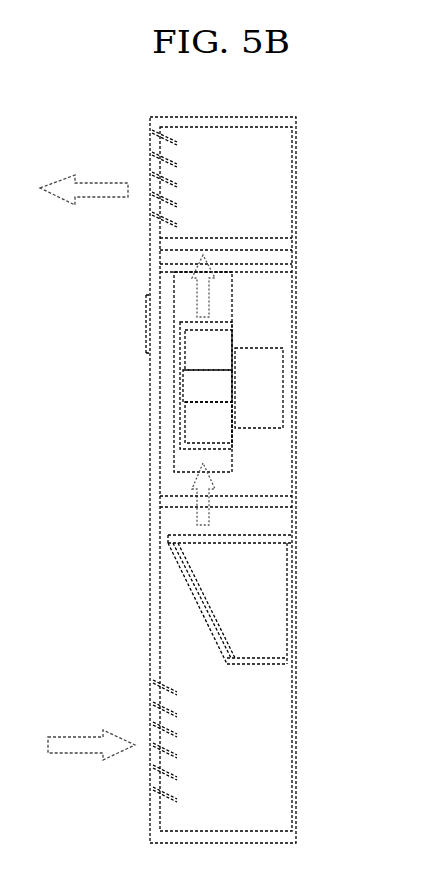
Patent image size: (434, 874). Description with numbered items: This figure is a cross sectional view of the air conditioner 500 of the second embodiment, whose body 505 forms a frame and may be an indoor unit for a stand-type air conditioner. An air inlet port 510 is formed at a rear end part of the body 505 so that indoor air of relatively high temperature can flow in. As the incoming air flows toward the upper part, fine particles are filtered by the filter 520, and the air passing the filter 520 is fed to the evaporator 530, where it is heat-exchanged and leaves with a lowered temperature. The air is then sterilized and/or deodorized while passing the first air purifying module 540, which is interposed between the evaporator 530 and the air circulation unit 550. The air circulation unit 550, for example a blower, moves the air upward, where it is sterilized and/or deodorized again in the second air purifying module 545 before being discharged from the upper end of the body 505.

The air conditioner 500 is at (153, 133).
The body 505 is at (293, 160).
The air inlet port 510 is at (155, 682).
The filter 520 is at (203, 600).
The evaporator 530 is at (265, 586).
The first air purifying module 540 is at (272, 495).
The second air purifying module 545 is at (280, 238).
The air circulation unit 550 is at (253, 392).